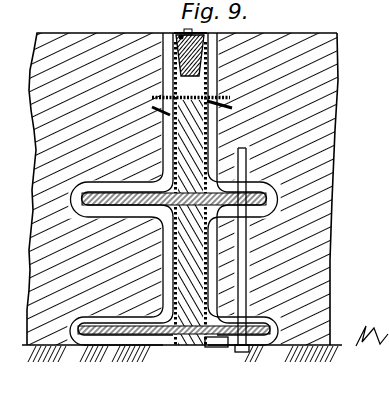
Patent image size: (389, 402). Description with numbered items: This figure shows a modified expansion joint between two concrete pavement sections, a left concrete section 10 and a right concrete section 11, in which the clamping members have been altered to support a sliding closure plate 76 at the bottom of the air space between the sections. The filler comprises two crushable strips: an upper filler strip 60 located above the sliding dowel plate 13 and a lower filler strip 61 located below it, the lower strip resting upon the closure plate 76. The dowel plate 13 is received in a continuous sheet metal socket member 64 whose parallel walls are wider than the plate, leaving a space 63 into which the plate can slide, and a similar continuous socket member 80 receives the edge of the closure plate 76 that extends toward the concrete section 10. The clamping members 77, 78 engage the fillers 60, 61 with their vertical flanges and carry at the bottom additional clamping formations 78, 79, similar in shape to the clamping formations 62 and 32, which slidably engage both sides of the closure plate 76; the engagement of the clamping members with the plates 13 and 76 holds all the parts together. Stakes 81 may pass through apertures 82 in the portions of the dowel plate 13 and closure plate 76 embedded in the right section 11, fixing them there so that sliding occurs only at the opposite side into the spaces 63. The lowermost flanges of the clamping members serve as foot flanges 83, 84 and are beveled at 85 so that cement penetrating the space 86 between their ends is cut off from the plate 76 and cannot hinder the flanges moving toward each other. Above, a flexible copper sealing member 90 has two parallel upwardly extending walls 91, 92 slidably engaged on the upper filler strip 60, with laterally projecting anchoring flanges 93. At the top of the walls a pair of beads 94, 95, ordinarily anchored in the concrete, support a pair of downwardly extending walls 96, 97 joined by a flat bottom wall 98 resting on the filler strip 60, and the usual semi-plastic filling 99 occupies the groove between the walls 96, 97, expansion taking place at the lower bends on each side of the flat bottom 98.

The concrete section 10 is at (50, 46).
The concrete section 11 is at (337, 132).
The sliding dowel plate 13 is at (272, 118).
The clamping formation 32 is at (272, 196).
The filler strip 60 is at (197, 120).
The filler strip 61 is at (194, 245).
The clamping formation 62 is at (82, 196).
The space 63 is at (112, 222).
The sheet metal socket member 64 is at (104, 192).
The sliding closure plate 76 is at (252, 268).
The clamping member 77 is at (162, 265).
The clamping member 78 is at (209, 257).
The clamping formation 79 is at (282, 325).
The sheet metal socket member 80 is at (113, 325).
The stake 81 is at (248, 152).
The aperture 82 is at (250, 186).
The foot flange 83 is at (152, 343).
The foot flange 84 is at (242, 352).
The bevel 85 is at (212, 346).
The space 86 is at (255, 283).
The flexible copper sealing member 90 is at (218, 60).
The upwardly extending wall 91 is at (226, 74).
The upwardly extending wall 92 is at (176, 76).
The anchoring flange 93 is at (170, 97).
The bead 94 is at (178, 31).
The bead 95 is at (208, 53).
The downwardly extending wall 96 is at (177, 55).
The downwardly extending wall 97 is at (192, 25).
The flat bottom wall 98 is at (190, 98).
The semi-plastic filling 99 is at (181, 34).